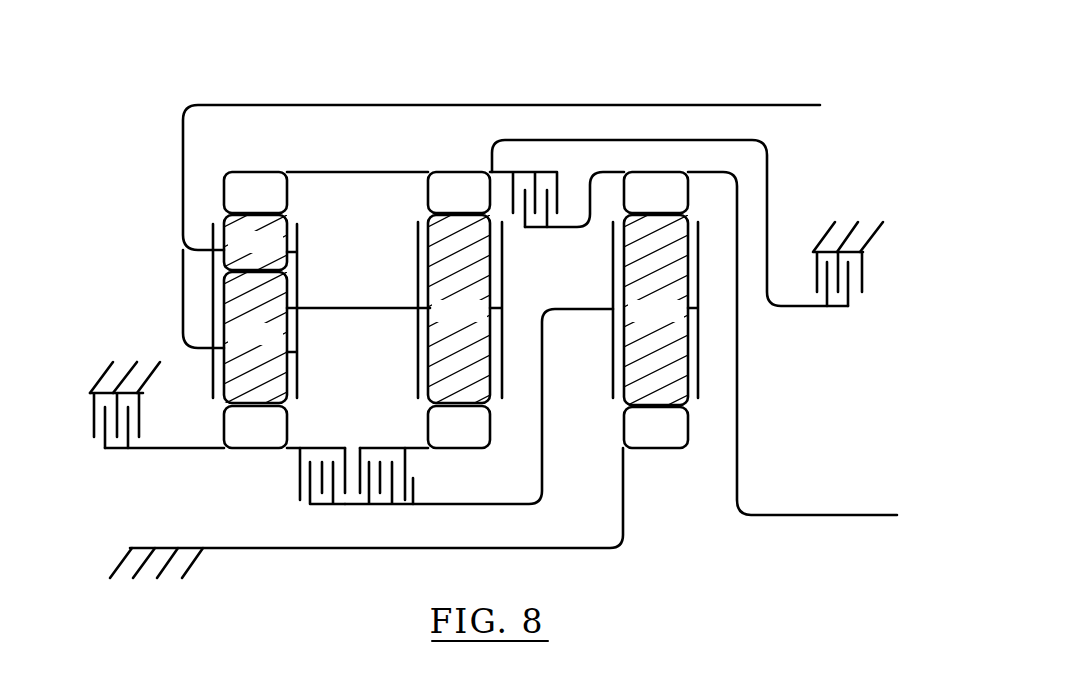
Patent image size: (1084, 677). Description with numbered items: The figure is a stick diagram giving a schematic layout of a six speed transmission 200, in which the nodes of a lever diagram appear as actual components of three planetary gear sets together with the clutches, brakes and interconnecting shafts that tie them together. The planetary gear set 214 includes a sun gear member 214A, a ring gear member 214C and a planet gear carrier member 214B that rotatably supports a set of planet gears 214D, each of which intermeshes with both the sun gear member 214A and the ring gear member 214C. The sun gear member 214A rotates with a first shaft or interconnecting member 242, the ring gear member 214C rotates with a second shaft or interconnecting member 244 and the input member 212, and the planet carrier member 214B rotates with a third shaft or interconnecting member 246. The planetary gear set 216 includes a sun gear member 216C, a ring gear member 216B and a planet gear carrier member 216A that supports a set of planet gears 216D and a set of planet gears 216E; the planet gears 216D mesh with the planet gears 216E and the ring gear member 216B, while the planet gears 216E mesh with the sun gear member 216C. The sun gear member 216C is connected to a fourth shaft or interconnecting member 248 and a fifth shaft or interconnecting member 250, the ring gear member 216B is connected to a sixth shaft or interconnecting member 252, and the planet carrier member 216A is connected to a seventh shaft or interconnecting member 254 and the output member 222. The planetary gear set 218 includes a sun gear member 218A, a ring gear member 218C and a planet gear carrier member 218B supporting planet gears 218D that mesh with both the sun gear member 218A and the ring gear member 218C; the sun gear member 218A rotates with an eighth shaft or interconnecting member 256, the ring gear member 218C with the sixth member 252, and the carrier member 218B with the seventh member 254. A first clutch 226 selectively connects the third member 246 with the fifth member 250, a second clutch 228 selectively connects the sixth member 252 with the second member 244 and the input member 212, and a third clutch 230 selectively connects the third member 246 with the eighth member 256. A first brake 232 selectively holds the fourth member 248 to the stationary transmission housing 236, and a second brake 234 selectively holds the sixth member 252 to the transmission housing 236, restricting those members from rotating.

The six speed transmission 200 is at (832, 90).
The input member 212 is at (870, 517).
The planetary gear set 214 is at (652, 486).
The sun gear member 214A is at (660, 433).
The planet gear carrier member 214B is at (700, 333).
The ring gear member 214C is at (660, 188).
The planet gears 214D is at (656, 311).
The planetary gear set 216 is at (254, 462).
The planet gear carrier member 216A is at (300, 232).
The ring gear member 216B is at (245, 188).
The sun gear member 216C is at (237, 433).
The planet gears 216D is at (255, 241).
The planet gears 216E is at (255, 338).
The planetary gear set 218 is at (455, 470).
The sun gear member 218A is at (470, 425).
The planet gear carrier member 218B is at (415, 343).
The ring gear member 218C is at (458, 188).
The planet gears 218D is at (459, 311).
The output member 222 is at (800, 107).
The first clutch 226 is at (293, 483).
The second clutch 228 is at (566, 188).
The third clutch 230 is at (410, 485).
The first brake 232 is at (92, 420).
The second brake 234 is at (865, 275).
The transmission housing 236 is at (110, 368).
The first shaft or interconnecting member 242 is at (588, 550).
The second shaft or interconnecting member 244 is at (555, 228).
The third shaft or interconnecting member 246 is at (545, 410).
The fourth shaft or interconnecting member 248 is at (140, 452).
The fifth shaft or interconnecting member 250 is at (300, 440).
The sixth shaft or interconnecting member 252 is at (366, 170).
The seventh shaft or interconnecting member 254 is at (378, 306).
The eighth shaft or interconnecting member 256 is at (380, 444).